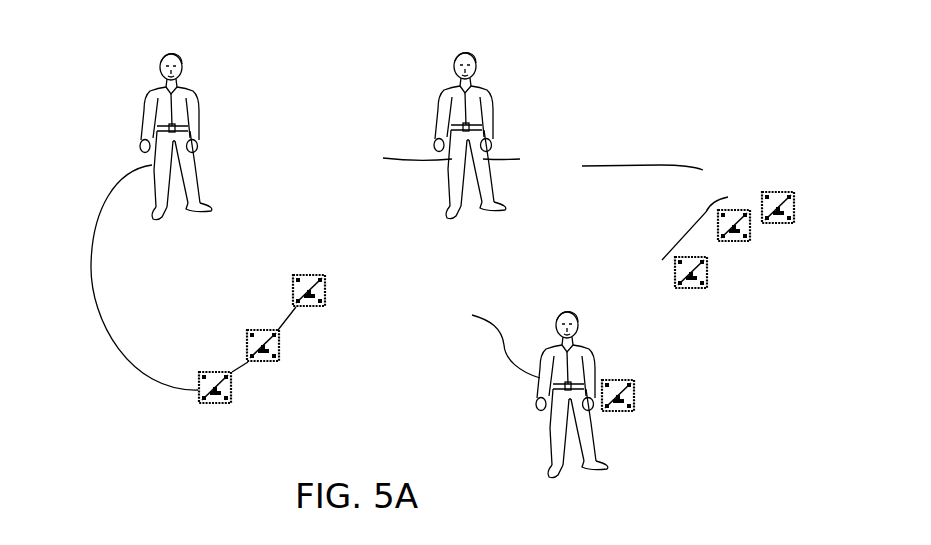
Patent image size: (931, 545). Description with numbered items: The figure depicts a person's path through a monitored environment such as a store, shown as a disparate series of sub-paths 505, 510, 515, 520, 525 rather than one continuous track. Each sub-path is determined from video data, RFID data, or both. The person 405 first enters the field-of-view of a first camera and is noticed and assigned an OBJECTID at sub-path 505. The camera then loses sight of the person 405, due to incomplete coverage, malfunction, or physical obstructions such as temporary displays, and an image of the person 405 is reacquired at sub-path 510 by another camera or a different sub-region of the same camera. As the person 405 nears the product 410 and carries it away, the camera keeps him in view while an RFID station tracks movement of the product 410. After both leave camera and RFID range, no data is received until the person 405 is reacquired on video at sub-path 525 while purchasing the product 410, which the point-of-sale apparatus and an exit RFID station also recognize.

The person 405 is at (198, 103).
The product 410 is at (313, 307).
The sub-path 505 is at (623, 165).
The sub-path 510 is at (393, 156).
The sub-path 515 is at (91, 278).
The sub-path 520 is at (503, 333).
The sub-path 525 is at (710, 200).